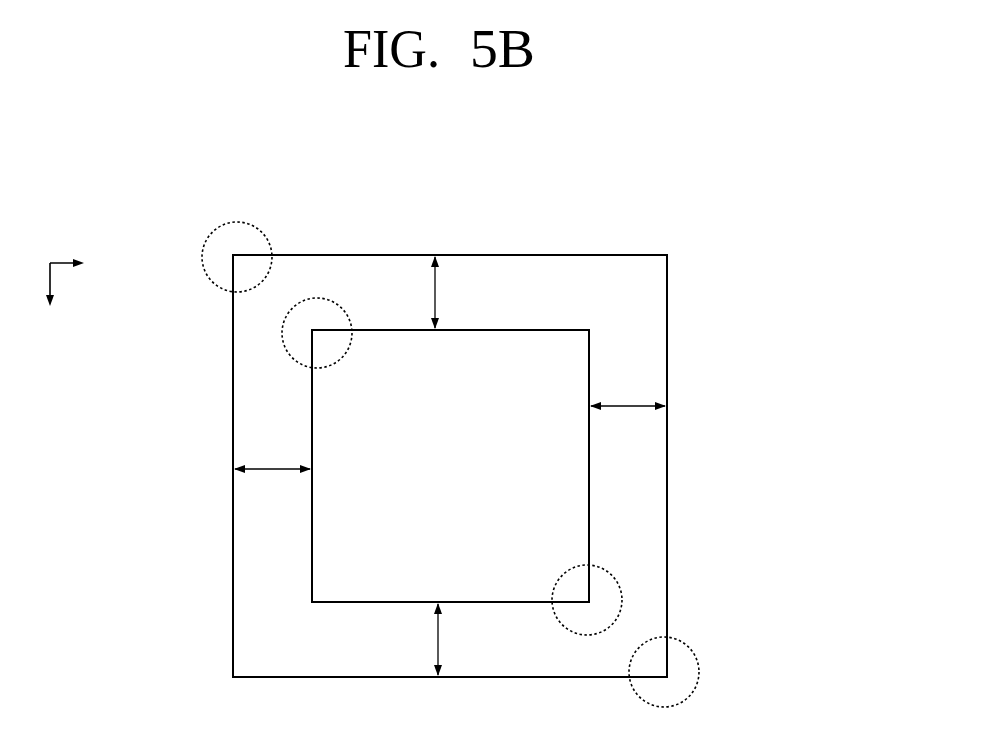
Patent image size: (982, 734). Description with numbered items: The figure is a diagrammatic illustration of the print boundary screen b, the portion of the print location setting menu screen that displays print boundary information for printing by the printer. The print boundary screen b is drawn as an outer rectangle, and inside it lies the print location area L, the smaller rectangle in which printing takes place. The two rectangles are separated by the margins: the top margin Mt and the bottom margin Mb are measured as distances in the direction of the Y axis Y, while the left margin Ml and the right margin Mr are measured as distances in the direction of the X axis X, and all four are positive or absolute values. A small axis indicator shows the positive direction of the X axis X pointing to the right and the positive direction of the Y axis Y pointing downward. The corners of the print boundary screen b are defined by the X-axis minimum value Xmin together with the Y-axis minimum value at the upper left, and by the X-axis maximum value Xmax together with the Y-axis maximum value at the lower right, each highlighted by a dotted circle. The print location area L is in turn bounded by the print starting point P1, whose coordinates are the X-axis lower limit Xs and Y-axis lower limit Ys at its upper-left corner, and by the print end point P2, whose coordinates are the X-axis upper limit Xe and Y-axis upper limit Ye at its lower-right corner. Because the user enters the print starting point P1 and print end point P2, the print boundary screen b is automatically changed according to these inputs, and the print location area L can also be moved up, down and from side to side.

The print boundary screen b is at (672, 461).
The print location area L is at (362, 519).
The top margin Mt is at (454, 292).
The right margin Mr is at (628, 393).
The left margin Ml is at (272, 457).
The bottom margin Mb is at (418, 639).
The X-axis minimum value Xmin is at (223, 223).
The X-axis maximum value Xmax is at (699, 662).
The print starting point P1 is at (330, 300).
The print end point P2 is at (622, 585).
The X axis X is at (99, 276).
The Y axis Y is at (68, 316).